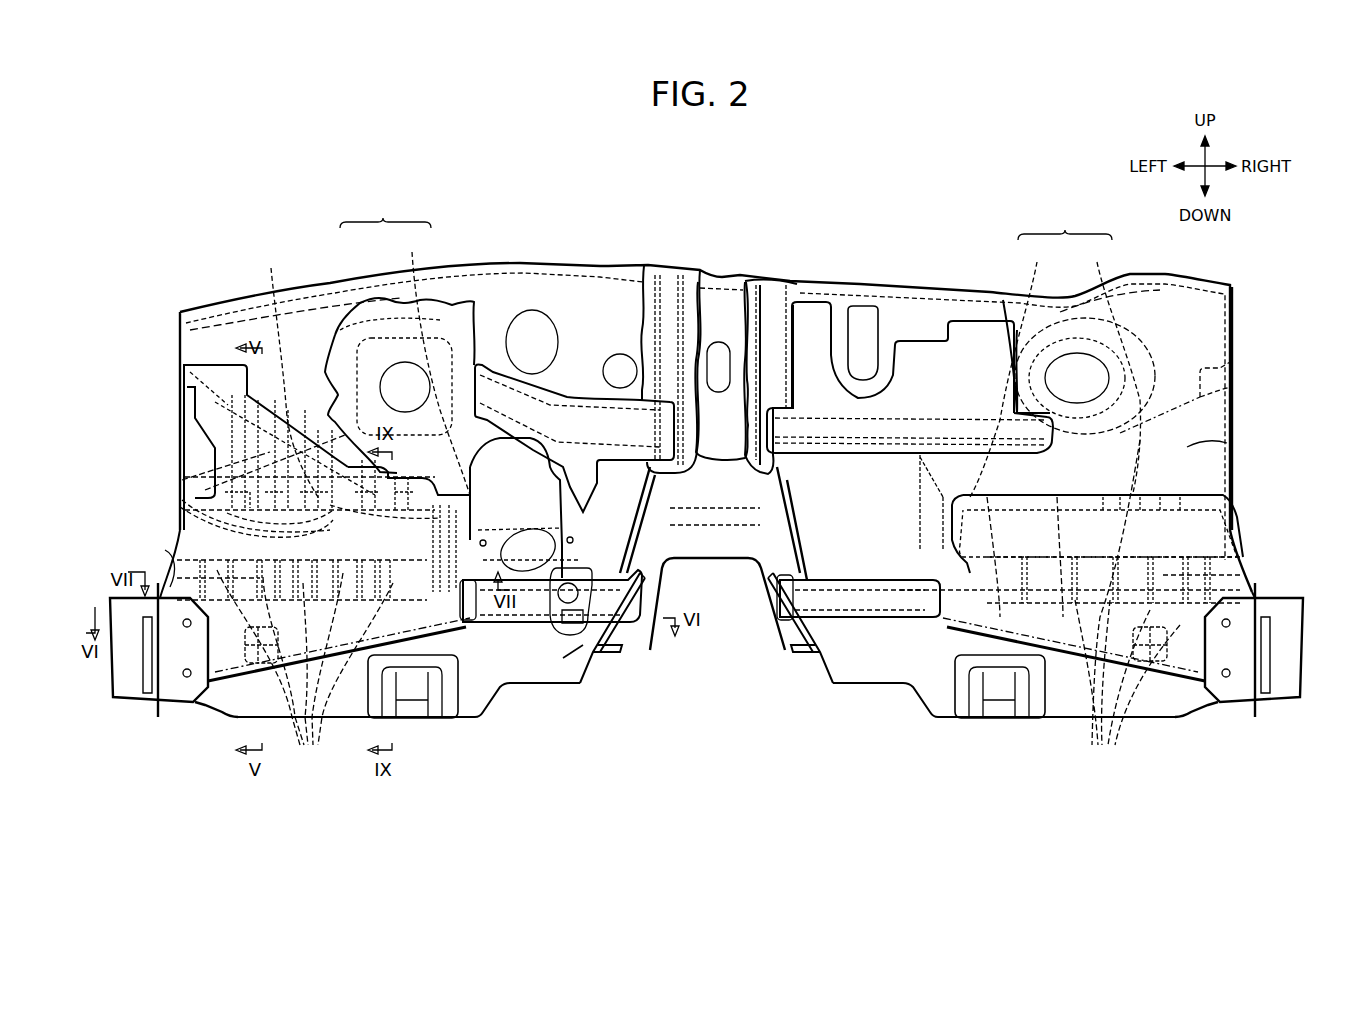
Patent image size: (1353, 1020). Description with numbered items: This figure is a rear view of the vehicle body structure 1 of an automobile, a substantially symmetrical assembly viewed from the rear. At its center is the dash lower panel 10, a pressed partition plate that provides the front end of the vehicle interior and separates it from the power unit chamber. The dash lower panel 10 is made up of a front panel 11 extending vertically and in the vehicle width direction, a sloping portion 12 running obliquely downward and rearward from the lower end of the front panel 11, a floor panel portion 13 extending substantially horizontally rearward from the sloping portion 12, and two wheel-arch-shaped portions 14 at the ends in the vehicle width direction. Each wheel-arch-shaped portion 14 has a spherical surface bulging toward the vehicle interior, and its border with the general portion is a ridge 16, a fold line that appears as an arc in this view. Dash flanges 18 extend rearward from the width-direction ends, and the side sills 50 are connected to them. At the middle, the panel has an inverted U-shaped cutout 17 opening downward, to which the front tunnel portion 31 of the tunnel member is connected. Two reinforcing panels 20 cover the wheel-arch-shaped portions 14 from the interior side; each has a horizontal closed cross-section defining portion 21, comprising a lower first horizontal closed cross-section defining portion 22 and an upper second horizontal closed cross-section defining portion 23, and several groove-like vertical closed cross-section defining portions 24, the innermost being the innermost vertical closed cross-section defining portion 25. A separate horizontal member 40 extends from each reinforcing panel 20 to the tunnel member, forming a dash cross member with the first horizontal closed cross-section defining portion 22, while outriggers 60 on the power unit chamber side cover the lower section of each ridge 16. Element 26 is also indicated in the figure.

The vehicle body structure 1 is at (733, 212).
The dash lower panel 10 is at (545, 255).
The front panel 11 is at (600, 298).
The sloping portion 12 is at (563, 658).
The floor panel portion 13 is at (498, 690).
The wheel-arch-shaped portion 14 is at (200, 455).
The ridge 16 is at (180, 346).
The cutout 17 is at (593, 655).
The dash flange 18 is at (182, 404).
The reinforcing panel 20 is at (215, 362).
The horizontal closed cross-section defining portion 21 is at (726, 215).
The first horizontal closed cross-section defining portion 22 is at (432, 360).
The second horizontal closed cross-section defining portion 23 is at (328, 340).
The vertical closed cross-section defining portion 24 is at (190, 498).
The innermost vertical closed cross-section defining portion 25 is at (426, 722).
The bracket 26 is at (348, 379).
The front tunnel portion 31 is at (710, 540).
The horizontal member 40 is at (790, 645).
The side sill 50 is at (125, 705).
The outrigger 60 is at (215, 705).